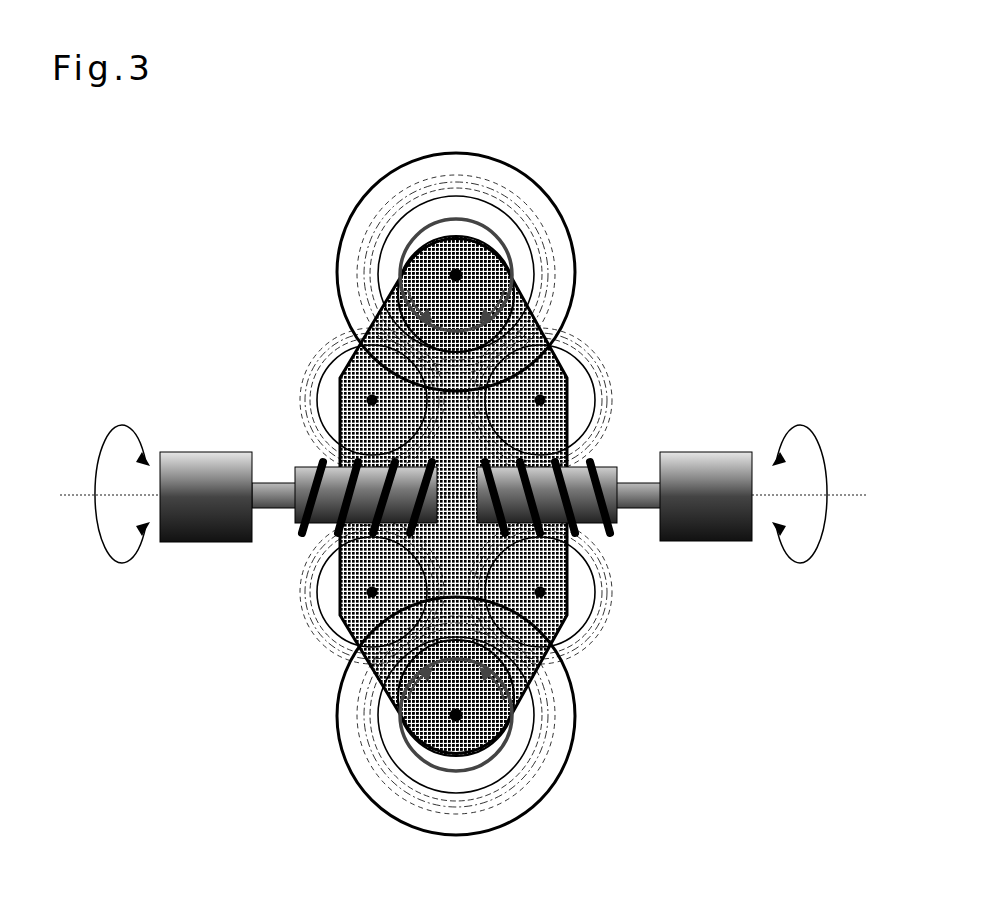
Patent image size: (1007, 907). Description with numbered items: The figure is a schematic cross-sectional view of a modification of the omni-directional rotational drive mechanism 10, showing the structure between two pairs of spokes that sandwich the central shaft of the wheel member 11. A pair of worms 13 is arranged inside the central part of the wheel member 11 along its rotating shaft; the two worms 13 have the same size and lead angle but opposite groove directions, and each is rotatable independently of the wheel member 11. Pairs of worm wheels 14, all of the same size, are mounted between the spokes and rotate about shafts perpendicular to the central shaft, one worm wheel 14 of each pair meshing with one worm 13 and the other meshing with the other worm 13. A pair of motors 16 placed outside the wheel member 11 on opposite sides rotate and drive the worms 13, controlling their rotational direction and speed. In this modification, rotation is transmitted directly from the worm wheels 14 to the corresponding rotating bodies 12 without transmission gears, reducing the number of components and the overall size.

The omni-directional rotational drive mechanism 10 is at (162, 206).
The wheel member 11 is at (602, 508).
The rotating body 12 is at (648, 858).
The worm 13 is at (534, 554).
The worm wheel 14 is at (337, 377).
The motor 16 is at (197, 452).